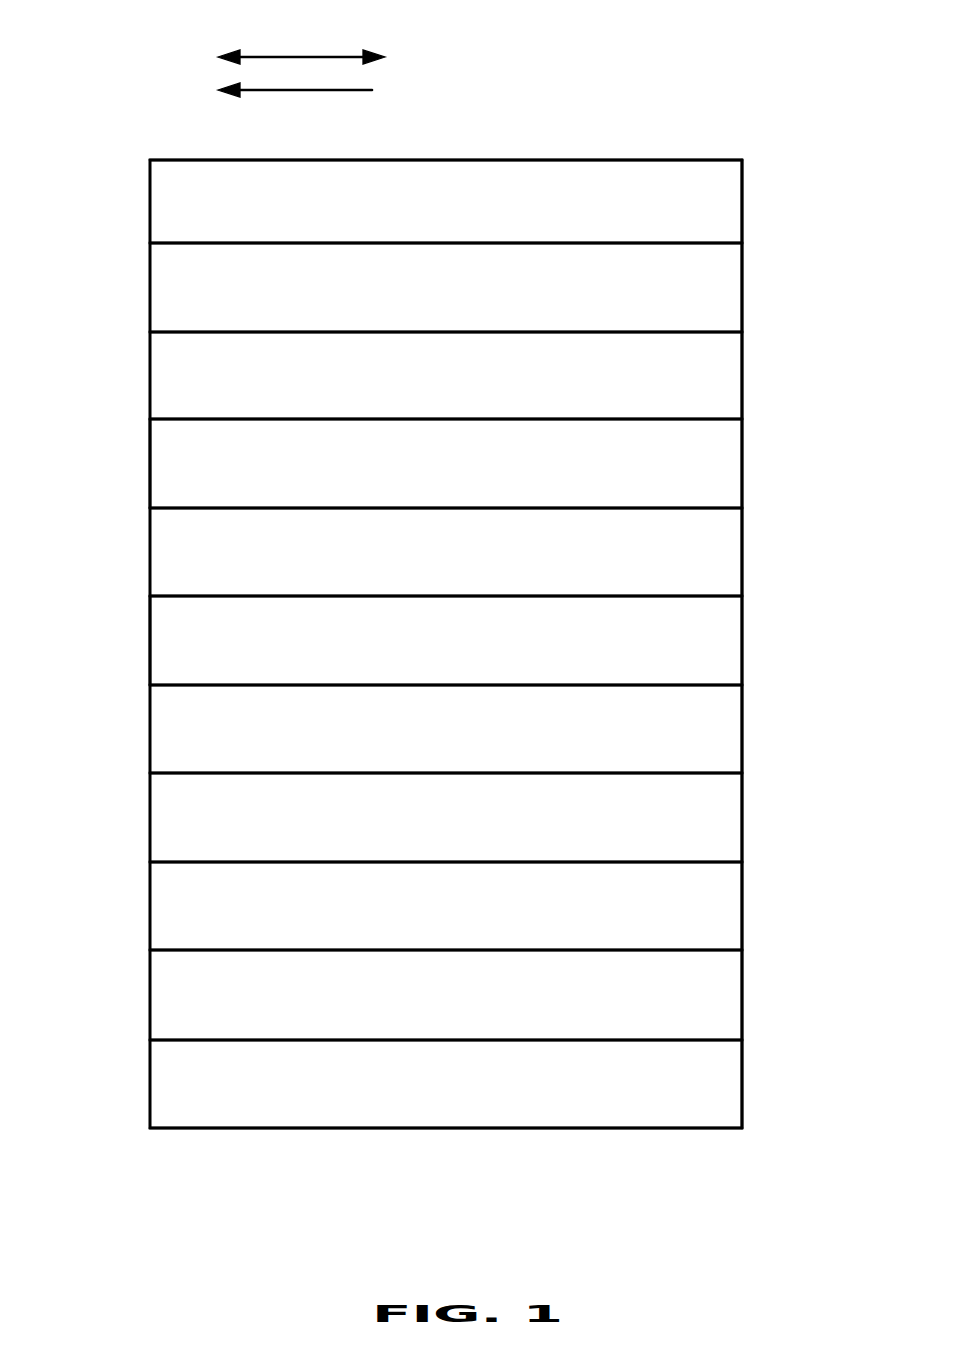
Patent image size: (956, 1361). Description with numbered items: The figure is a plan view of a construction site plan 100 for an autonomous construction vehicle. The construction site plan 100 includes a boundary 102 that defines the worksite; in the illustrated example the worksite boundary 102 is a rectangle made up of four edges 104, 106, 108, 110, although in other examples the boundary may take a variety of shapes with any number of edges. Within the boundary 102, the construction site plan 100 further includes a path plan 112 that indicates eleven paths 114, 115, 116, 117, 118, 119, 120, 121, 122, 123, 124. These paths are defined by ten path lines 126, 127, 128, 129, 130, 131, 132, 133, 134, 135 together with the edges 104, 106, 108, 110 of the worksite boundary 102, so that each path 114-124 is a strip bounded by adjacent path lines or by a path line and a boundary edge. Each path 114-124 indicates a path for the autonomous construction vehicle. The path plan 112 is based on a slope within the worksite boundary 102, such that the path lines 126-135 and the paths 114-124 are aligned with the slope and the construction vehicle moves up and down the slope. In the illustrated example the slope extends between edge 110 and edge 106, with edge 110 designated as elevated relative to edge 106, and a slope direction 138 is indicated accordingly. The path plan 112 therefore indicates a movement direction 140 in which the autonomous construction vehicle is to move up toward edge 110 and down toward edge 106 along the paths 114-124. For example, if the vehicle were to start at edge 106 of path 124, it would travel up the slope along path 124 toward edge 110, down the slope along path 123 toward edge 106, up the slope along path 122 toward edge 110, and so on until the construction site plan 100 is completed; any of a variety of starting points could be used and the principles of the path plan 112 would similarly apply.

The construction site plan 100 is at (108, 72).
The boundary 102 is at (743, 216).
The edge 104 is at (560, 145).
The edge 106 is at (758, 380).
The edge 108 is at (211, 1146).
The edge 110 is at (134, 648).
The path plan 112 is at (184, 470).
The path 114 is at (338, 214).
The path 115 is at (338, 301).
The path 116 is at (338, 389).
The path 117 is at (338, 477).
The path 118 is at (338, 565).
The path 119 is at (338, 654).
The path 120 is at (338, 742).
The path 121 is at (338, 831).
The path 122 is at (338, 919).
The path 123 is at (338, 1008).
The path 124 is at (338, 1097).
The path line 126 is at (500, 243).
The path line 127 is at (500, 332).
The path line 128 is at (500, 419).
The path line 129 is at (500, 508).
The path line 130 is at (500, 596).
The path line 131 is at (500, 685).
The path line 132 is at (500, 773).
The path line 133 is at (500, 862).
The path line 134 is at (500, 950).
The path line 135 is at (500, 1040).
The slope direction 138 is at (323, 92).
The movement direction 140 is at (290, 55).